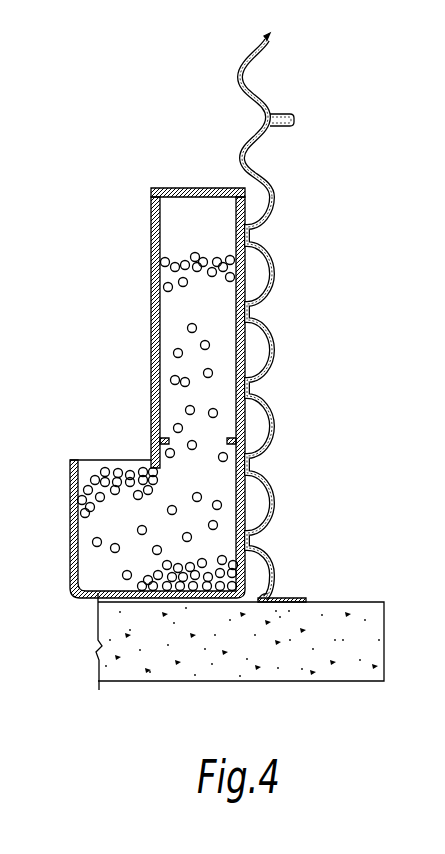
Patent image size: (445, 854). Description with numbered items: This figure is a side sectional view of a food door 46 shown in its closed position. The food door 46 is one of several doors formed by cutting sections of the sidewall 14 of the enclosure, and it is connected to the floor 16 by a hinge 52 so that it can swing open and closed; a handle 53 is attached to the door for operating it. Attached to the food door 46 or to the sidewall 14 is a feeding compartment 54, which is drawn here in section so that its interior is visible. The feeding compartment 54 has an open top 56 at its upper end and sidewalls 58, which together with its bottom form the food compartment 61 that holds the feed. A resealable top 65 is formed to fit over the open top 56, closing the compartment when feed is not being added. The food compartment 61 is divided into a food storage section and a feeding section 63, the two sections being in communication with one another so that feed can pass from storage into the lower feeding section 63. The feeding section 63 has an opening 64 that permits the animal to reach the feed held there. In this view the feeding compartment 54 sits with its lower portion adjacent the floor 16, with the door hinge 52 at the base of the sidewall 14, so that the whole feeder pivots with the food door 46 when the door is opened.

The sidewall 14 is at (264, 40).
The floor 16 is at (100, 603).
The food door 46 is at (317, 343).
The hinge 52 is at (291, 598).
The handle 53 is at (285, 114).
The feeding compartment 54 is at (141, 160).
The open top 56 is at (180, 222).
The sidewalls 58 is at (156, 282).
The food compartment 61 is at (188, 341).
The feeding section 63 is at (108, 518).
The opening 64 is at (108, 460).
The resealable top 65 is at (207, 188).